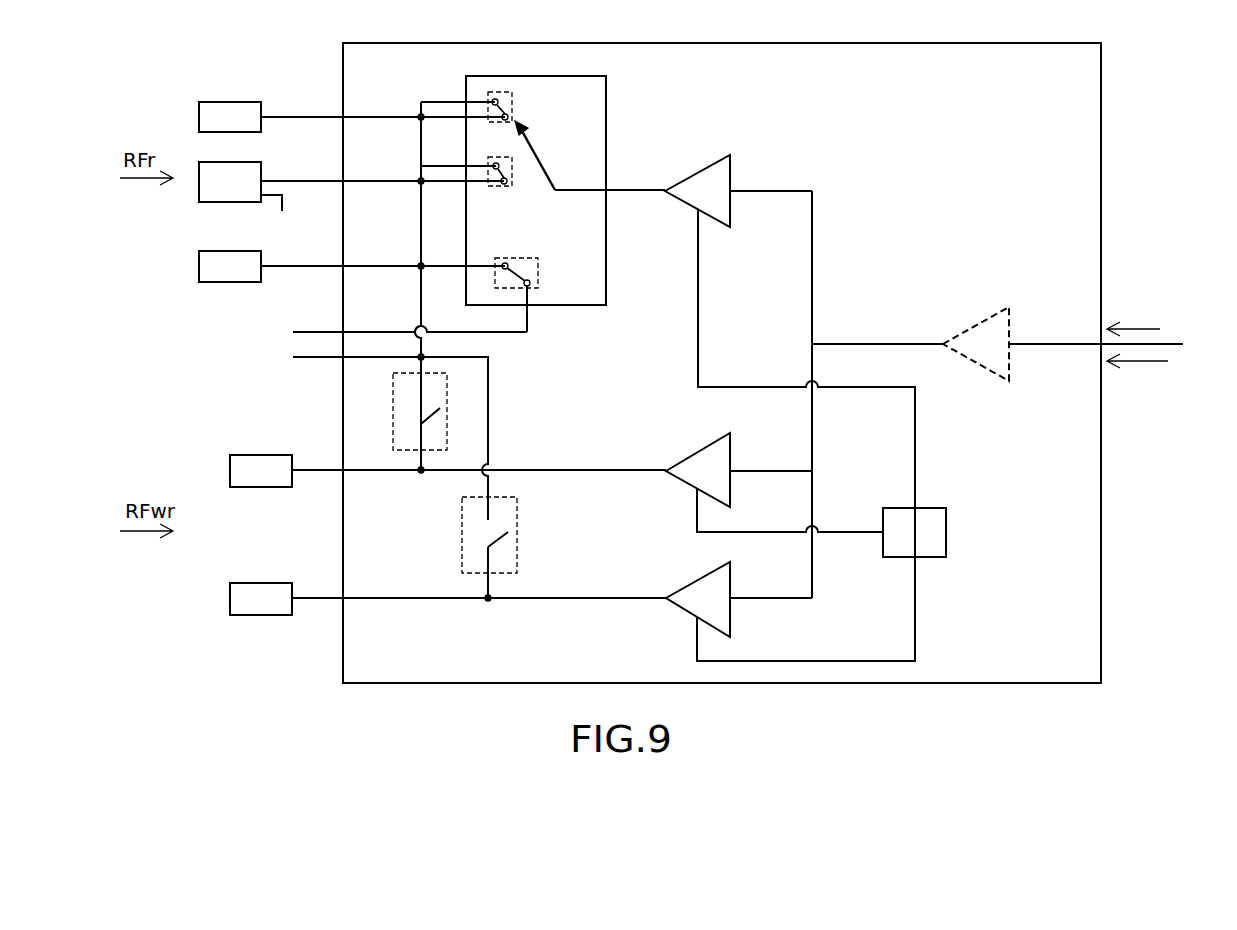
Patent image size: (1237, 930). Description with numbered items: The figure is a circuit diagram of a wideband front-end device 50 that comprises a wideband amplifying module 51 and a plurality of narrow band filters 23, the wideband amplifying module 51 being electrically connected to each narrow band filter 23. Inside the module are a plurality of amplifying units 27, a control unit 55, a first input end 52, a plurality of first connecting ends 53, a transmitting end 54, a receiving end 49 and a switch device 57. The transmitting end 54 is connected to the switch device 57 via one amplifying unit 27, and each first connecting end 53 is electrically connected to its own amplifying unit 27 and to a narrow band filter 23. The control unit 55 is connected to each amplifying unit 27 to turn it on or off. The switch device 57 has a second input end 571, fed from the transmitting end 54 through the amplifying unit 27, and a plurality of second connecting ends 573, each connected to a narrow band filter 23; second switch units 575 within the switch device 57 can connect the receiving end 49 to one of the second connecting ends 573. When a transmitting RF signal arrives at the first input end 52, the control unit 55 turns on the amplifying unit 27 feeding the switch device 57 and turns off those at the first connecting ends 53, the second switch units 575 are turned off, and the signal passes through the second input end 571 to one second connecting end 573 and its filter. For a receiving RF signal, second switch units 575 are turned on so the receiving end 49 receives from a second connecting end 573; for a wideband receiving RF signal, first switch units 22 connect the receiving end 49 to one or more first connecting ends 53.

The wideband front-end device 50 is at (238, 55).
The wideband amplifying module 51 is at (1008, 62).
The narrow band filter 23 is at (250, 108).
The second connecting end 573 is at (373, 115).
The switch device 57 is at (599, 122).
The second switch unit 575 is at (512, 103).
The second input end 571 is at (635, 195).
The amplifying unit 27 is at (695, 180).
The transmitting end 54 is at (770, 191).
The control unit 55 is at (946, 530).
The first input end 52 is at (1177, 343).
The receiving end 49 is at (283, 343).
The first switch unit 22 is at (402, 422).
The first connecting end 53 is at (535, 470).